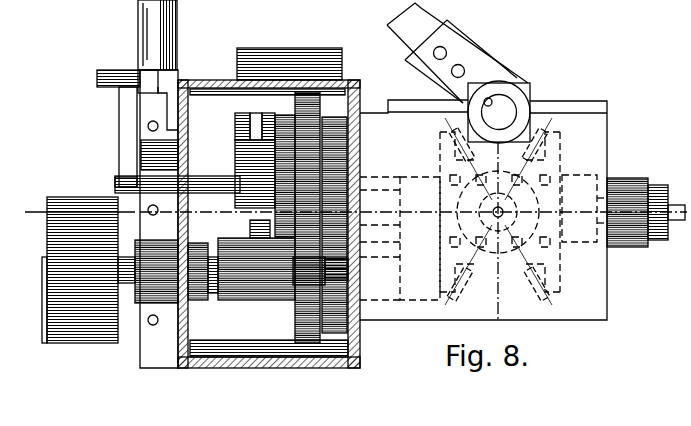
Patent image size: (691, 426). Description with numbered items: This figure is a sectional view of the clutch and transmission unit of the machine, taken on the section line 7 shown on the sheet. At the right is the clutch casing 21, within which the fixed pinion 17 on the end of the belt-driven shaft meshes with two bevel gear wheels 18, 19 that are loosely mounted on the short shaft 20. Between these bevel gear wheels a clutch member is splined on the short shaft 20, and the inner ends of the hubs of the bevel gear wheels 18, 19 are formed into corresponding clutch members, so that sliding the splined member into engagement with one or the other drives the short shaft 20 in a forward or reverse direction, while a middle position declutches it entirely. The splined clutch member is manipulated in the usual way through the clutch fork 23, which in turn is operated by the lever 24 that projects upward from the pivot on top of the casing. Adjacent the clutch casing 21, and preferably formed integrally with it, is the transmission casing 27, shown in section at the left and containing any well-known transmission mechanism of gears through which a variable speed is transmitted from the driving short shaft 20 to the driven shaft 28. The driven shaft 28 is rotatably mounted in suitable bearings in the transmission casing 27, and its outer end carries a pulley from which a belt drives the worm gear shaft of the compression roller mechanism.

The section line 7- 7 is at (687, 200).
The fixed pinion 17 is at (486, 250).
The bevel gear wheel 18 is at (442, 290).
The bevel gear wheel 19 is at (552, 290).
The short shaft 20 is at (433, 190).
The clutch casing 21 is at (607, 118).
The clutch fork 23 is at (545, 142).
The lever 24 is at (397, 33).
The transmission casing 27 is at (293, 80).
The driven shaft 28 is at (123, 257).